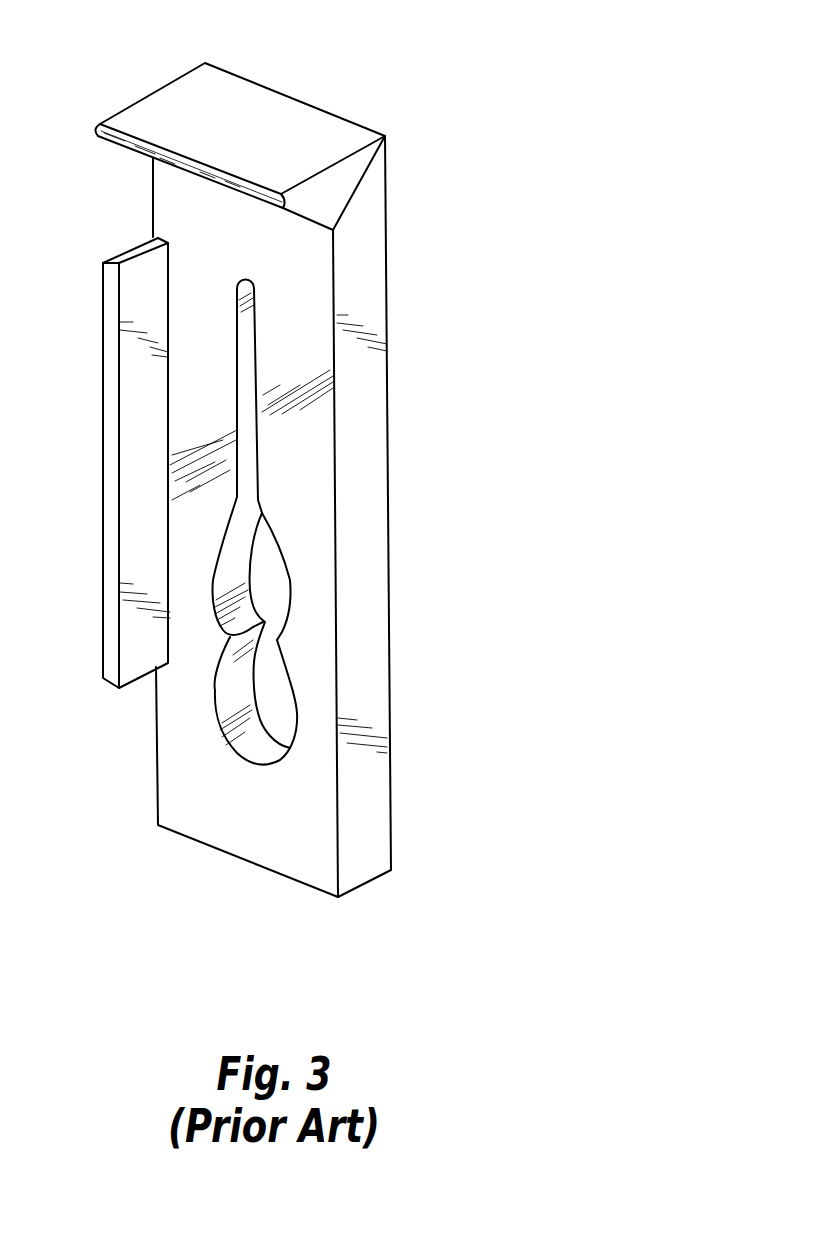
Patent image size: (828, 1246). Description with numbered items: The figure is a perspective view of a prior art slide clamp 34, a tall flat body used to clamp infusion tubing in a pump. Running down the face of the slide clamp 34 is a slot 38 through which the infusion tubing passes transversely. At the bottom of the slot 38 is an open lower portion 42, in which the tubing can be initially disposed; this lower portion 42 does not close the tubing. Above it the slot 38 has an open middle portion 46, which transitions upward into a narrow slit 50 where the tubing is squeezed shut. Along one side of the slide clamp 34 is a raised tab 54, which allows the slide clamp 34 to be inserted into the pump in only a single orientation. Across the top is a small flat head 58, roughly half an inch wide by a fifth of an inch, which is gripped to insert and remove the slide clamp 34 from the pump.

The slide clamp 34 is at (388, 372).
The slot 38 is at (262, 574).
The open lower portion 42 is at (279, 694).
The open middle portion 46 is at (277, 613).
The narrow slit 50 is at (250, 478).
The raised tab 54 is at (137, 393).
The flat head 58 is at (253, 127).